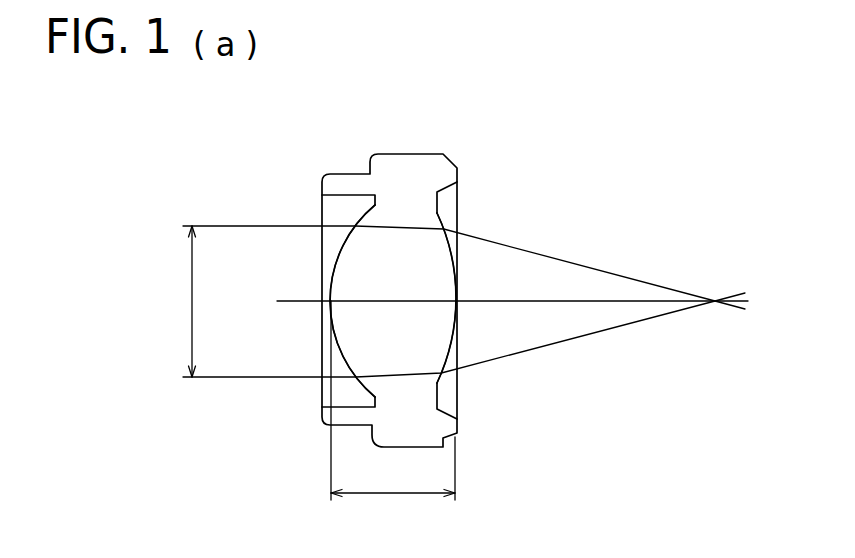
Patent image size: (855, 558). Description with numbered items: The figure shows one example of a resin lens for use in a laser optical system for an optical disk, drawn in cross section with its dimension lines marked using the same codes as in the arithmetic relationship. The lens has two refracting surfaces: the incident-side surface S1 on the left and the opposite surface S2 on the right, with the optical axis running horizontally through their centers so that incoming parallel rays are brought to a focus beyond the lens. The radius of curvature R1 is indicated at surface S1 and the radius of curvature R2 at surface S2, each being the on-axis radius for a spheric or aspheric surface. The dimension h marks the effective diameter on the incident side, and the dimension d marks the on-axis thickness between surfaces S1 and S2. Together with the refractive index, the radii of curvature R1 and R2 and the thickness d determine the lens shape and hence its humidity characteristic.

The lens surface S1 is at (362, 217).
The lens surface S2 is at (439, 224).
The radius of curvature R1 is at (335, 263).
The radius of curvature R2 is at (447, 350).
The effective diameter h is at (179, 301).
The on-axis thickness d is at (393, 400).